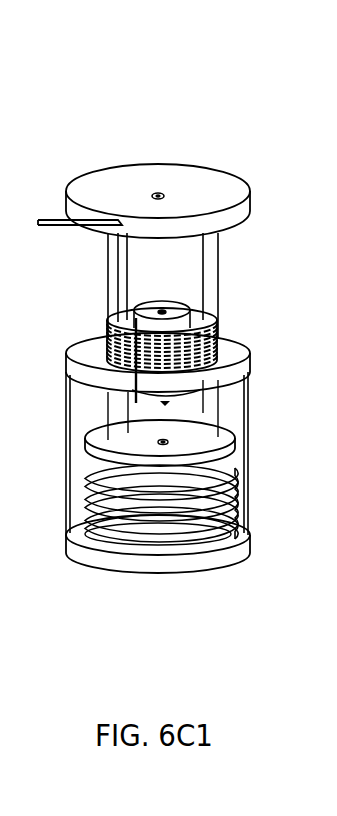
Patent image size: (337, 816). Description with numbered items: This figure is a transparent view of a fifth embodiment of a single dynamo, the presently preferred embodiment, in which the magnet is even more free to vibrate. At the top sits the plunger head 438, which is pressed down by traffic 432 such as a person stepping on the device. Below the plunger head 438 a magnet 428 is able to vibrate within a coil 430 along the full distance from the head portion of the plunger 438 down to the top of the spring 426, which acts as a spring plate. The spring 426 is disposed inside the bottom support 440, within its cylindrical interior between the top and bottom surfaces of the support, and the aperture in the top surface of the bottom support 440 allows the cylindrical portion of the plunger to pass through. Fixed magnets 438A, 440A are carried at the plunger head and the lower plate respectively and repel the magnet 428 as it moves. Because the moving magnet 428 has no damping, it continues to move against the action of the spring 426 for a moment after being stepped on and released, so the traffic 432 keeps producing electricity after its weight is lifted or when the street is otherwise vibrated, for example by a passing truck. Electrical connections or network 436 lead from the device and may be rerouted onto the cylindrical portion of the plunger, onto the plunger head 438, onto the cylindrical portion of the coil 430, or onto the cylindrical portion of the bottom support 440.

The traffic 432 is at (158, 157).
The plunger head 438 is at (106, 188).
The fixed magnet 438A is at (167, 195).
The electrical connections/network 436 is at (55, 227).
The magnet 428 is at (173, 305).
The coil 430 is at (215, 340).
The fixed magnet 440A is at (177, 447).
The spring 426 is at (230, 488).
The bottom support 440 is at (147, 565).